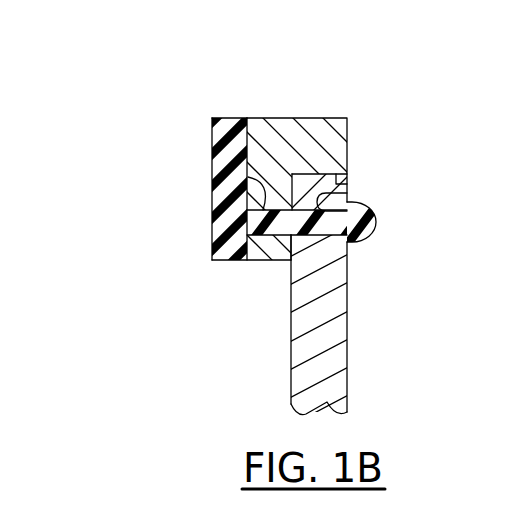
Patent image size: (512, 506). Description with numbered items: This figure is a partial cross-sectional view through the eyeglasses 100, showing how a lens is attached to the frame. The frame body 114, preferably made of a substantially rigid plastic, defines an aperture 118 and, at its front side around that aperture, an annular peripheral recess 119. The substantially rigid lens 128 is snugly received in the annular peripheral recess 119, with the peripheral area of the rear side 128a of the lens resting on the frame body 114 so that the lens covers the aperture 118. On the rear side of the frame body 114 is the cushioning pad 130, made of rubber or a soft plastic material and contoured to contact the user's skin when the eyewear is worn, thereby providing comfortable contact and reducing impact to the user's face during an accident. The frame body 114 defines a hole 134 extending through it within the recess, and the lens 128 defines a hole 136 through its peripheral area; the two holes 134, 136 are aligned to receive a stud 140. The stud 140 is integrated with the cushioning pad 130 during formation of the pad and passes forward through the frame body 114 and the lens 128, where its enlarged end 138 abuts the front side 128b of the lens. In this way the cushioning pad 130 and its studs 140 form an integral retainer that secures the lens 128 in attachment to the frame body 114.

The eyeglasses 100 is at (407, 102).
The frame body 114 is at (293, 117).
The aperture 118 is at (257, 263).
The annular peripheral recess 119 is at (343, 181).
The lens 128 is at (322, 325).
The rear side of the lens 128a is at (291, 385).
The front side of the lens 128b is at (350, 378).
The cushioning pad 130 is at (224, 117).
The hole 134 is at (253, 173).
The hole 136 is at (350, 197).
The enlarged end 138 is at (375, 228).
The stud 140 is at (258, 220).